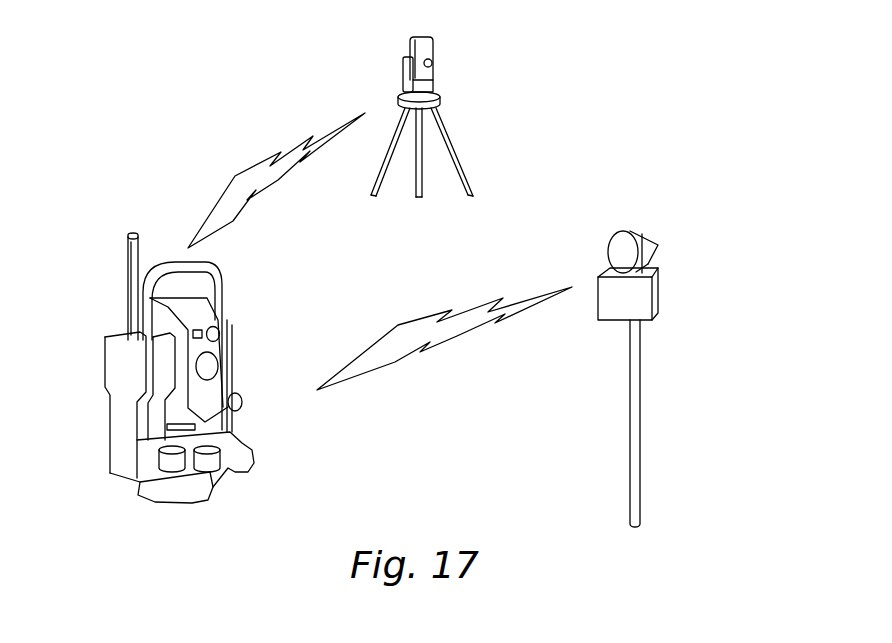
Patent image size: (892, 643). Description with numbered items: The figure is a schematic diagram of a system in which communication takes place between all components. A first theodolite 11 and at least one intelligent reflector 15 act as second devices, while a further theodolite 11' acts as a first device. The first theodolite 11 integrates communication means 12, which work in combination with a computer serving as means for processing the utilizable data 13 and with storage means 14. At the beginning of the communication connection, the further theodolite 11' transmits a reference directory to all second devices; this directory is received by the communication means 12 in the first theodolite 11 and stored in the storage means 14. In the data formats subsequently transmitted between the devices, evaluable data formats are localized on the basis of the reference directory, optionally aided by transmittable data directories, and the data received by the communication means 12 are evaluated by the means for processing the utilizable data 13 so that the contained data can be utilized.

The first theodolite 11 is at (213, 373).
The further theodolite 11' is at (470, 117).
The communication means 12 is at (78, 276).
The means for processing the utilizable data 13 is at (103, 452).
The storage means 14 is at (272, 447).
The intelligent reflector 15 is at (682, 379).